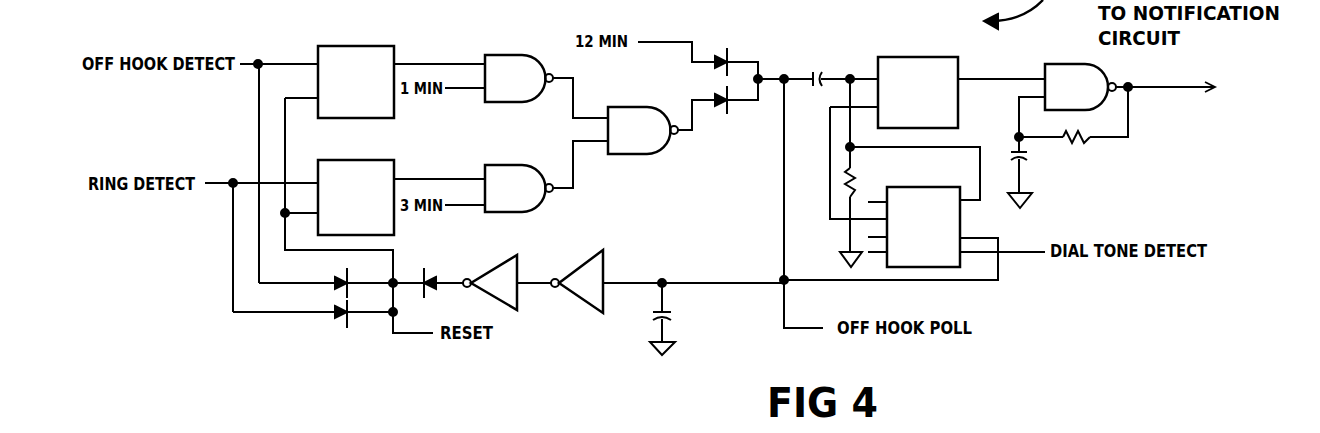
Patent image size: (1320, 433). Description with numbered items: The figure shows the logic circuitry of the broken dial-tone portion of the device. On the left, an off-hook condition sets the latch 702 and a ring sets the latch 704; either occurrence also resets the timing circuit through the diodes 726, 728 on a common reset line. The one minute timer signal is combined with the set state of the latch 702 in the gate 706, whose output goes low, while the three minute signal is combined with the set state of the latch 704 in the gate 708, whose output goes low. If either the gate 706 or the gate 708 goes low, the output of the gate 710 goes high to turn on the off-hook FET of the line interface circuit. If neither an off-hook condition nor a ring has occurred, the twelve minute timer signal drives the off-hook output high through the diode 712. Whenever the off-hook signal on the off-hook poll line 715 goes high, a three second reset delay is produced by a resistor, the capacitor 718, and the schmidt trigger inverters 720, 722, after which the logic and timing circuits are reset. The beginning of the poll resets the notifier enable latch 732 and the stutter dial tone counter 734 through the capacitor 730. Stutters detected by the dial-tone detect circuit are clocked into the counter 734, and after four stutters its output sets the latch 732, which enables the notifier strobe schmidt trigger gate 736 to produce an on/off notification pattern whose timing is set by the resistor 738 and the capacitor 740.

The latch 702 is at (356, 68).
The latch 704 is at (356, 183).
The gate 706 is at (519, 65).
The gate 708 is at (519, 176).
The gate 710 is at (643, 115).
The diode 712 is at (725, 64).
The off hook poll line 715 is at (693, 263).
The capacitor 718 is at (687, 319).
The schmidt trigger inverter 720 is at (585, 267).
The schmidt trigger inverter 722 is at (498, 267).
The diode 726 is at (323, 325).
The diode 728 is at (321, 275).
The capacitor 730 is at (831, 61).
The notifier enable latch 732 is at (918, 77).
The stutter dial tone counter 734 is at (923, 212).
The notifier strobe schmidt trigger gate 736 is at (1079, 70).
The resistor 738 is at (1089, 151).
The capacitor 740 is at (1037, 172).